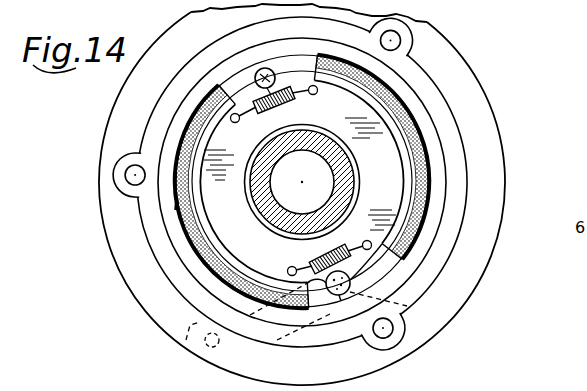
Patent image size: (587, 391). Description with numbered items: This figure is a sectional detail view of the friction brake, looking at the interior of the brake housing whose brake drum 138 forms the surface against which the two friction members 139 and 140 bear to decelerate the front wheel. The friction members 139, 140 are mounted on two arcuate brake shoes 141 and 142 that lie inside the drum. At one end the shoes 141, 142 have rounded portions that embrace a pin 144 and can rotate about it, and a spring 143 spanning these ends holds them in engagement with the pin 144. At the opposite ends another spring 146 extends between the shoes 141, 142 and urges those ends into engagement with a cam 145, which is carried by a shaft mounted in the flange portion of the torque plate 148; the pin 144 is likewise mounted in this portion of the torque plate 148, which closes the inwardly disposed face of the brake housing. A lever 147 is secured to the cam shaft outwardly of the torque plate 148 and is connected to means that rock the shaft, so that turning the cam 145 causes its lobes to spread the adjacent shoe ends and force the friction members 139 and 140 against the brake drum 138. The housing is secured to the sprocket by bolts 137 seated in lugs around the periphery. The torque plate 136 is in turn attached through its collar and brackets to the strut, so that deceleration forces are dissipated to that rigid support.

The torque plate 136 is at (163, 108).
The bolts 137 is at (401, 42).
The brake drum 138 is at (428, 125).
The friction member 139 is at (403, 107).
The friction member 140 is at (203, 257).
The brake shoe 141 is at (301, 182).
The brake shoe 142 is at (282, 182).
The spring 143 is at (288, 97).
The pin 144 is at (261, 70).
The cam 145 is at (343, 303).
The spring 146 is at (307, 261).
The lever 147 is at (222, 308).
The torque plate 148 is at (407, 306).